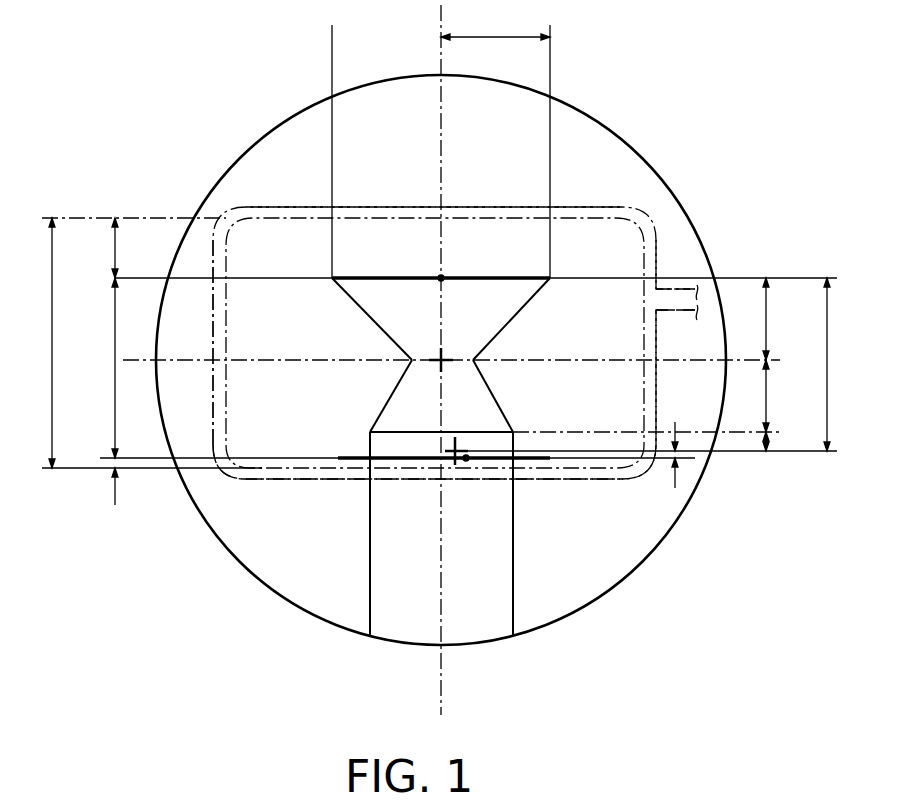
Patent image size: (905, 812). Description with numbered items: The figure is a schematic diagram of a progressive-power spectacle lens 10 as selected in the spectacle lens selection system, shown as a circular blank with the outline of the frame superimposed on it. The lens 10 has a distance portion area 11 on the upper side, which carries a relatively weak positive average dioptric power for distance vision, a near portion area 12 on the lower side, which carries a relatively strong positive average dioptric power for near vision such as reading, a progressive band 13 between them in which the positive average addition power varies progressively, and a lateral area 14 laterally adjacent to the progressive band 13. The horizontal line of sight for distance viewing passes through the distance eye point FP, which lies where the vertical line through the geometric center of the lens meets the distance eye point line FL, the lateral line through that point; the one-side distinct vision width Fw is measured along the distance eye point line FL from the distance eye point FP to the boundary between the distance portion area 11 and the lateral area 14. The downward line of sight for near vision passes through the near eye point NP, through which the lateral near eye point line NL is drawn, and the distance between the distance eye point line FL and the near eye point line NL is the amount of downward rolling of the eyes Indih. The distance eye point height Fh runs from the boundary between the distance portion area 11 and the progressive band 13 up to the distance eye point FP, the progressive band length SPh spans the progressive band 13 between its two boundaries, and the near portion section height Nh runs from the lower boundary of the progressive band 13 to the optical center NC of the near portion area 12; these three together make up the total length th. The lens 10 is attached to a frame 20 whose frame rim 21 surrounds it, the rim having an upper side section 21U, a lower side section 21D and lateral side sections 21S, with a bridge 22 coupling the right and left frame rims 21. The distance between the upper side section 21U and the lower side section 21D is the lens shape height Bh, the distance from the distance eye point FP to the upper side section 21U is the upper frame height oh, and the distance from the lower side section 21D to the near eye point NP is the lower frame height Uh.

The spectacle lens 10 is at (666, 60).
The distance portion area 11 is at (420, 225).
The near portion area 12 is at (381, 441).
The progressive band 13 is at (477, 372).
The lateral area 14 is at (258, 440).
The frame 20 is at (300, 481).
The frame rim 21 is at (290, 205).
The upper side section 21U is at (565, 207).
The lower side section 21D is at (565, 481).
The lateral side section 21S is at (228, 308).
The bridge 22 is at (686, 294).
The distance eye point line FL is at (392, 276).
The distance eye point FP is at (447, 276).
The side point SP is at (556, 277).
The optical center of the near portion area NC is at (458, 447).
The near eye point line NL is at (412, 462).
The near eye point NP is at (466, 462).
The one-side distinct vision width Fw is at (495, 25).
The upper frame height oh is at (101, 248).
The lens shape height Bh is at (37, 343).
The amount of downward rolling of the eyes Indih is at (89, 368).
The lower frame height Uh is at (118, 463).
The distance eye point height Fh is at (781, 319).
The progressive band length SPh is at (664, 396).
The total length th is at (838, 364).
The near portion section height Nh is at (769, 450).